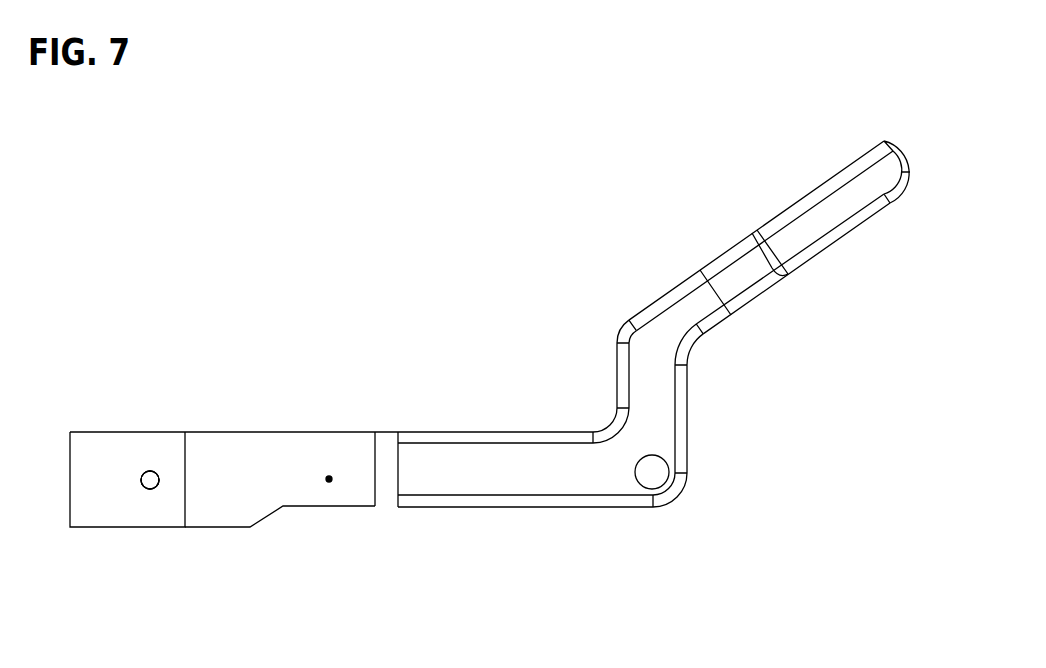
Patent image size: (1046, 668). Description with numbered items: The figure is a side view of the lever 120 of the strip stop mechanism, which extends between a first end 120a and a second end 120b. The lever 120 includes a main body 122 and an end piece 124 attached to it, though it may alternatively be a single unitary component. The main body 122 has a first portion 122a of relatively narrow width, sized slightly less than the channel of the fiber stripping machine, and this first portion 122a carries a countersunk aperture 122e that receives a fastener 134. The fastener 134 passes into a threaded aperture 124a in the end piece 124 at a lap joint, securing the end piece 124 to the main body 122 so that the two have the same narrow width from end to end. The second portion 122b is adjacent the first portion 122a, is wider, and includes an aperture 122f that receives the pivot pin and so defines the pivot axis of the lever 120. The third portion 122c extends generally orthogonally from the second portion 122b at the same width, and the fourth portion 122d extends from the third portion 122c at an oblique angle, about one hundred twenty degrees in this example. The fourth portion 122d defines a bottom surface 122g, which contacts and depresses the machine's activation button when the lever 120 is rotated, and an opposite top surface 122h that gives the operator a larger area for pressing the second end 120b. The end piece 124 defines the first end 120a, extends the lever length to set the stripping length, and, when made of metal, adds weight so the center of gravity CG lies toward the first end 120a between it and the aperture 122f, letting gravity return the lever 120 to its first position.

The lever 120 is at (162, 343).
The first end 120a is at (70, 508).
The second end 120b is at (906, 151).
The main body 122 is at (346, 442).
The first portion 122a is at (215, 512).
The second portion 122b is at (537, 490).
The third portion 122c is at (684, 415).
The fourth portion 122d is at (793, 262).
The aperture 122e is at (146, 474).
The aperture 122f is at (653, 473).
The bottom surface 122g is at (857, 228).
The top surface 122h is at (797, 198).
The end piece 124 is at (110, 515).
The aperture 124a is at (142, 480).
The fastener 134 is at (152, 488).
The center of gravity CG is at (329, 482).